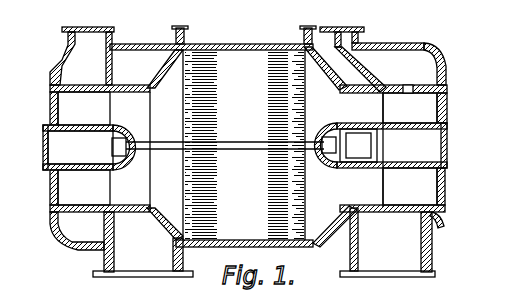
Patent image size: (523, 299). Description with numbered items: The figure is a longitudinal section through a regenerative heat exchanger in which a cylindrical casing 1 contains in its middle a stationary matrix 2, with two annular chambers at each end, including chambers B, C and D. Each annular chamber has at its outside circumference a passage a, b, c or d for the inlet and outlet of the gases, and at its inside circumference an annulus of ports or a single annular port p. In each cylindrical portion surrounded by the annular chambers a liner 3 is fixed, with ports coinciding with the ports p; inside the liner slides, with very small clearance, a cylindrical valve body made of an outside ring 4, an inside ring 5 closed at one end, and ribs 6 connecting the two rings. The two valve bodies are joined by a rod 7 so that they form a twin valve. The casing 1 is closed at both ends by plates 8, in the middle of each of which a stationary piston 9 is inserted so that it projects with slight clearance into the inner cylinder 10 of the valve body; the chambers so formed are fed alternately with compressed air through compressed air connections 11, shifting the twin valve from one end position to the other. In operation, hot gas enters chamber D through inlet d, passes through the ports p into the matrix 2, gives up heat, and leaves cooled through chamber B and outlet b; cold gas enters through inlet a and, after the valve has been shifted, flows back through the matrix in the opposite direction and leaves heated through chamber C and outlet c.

The cylindrical casing 1 is at (216, 50).
The stationary matrix 2 is at (243, 90).
The liner 3 is at (454, 94).
The outside ring 4 is at (105, 71).
The inside ring 5 is at (98, 170).
The ribs 6 is at (103, 183).
The rod 7 is at (153, 172).
The plates 8 is at (52, 222).
The stationary piston 9 is at (455, 143).
The inner cylinder 10 is at (88, 157).
The compressed air connections 11 is at (126, 161).
The inlet a is at (112, 33).
The outlet b is at (122, 268).
The outlet c is at (357, 33).
The inlet d is at (403, 265).
The annular chamber B is at (116, 71).
The annular chamber C is at (325, 68).
The annular chamber D is at (383, 73).
The annular port p is at (408, 84).